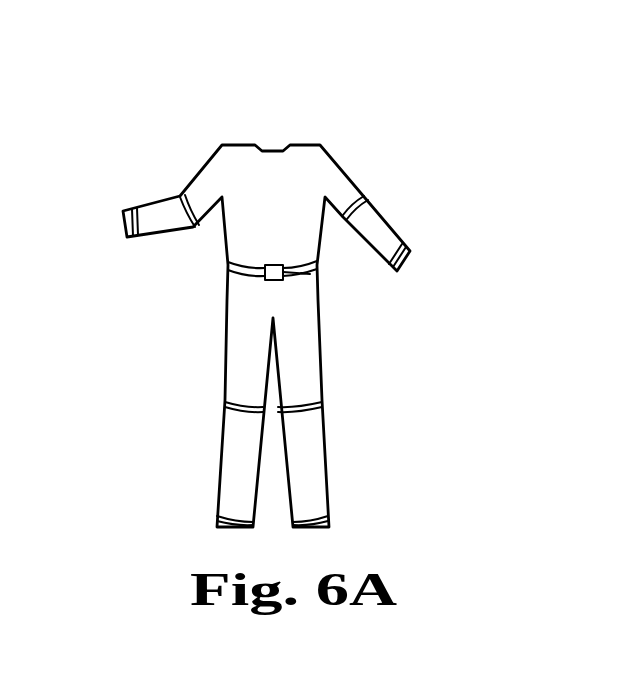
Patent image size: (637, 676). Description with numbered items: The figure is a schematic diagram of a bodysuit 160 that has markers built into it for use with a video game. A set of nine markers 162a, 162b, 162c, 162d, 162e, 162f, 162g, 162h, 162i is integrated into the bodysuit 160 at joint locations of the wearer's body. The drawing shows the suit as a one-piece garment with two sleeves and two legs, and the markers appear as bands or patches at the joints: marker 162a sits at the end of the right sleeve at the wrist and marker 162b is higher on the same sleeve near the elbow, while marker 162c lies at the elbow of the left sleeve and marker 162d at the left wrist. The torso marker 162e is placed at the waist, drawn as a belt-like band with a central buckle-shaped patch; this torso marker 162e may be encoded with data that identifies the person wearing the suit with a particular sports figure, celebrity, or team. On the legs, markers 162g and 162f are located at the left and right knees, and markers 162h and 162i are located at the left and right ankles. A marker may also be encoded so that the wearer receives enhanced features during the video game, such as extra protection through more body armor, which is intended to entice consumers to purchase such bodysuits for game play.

The bodysuit 160 is at (306, 144).
The marker 162a is at (405, 246).
The marker 162b is at (366, 199).
The marker 162c is at (179, 196).
The marker 162d is at (126, 212).
The torso marker 162e is at (292, 271).
The marker 162f is at (325, 402).
The marker 162g is at (225, 403).
The marker 162h is at (220, 514).
The marker 162i is at (326, 509).